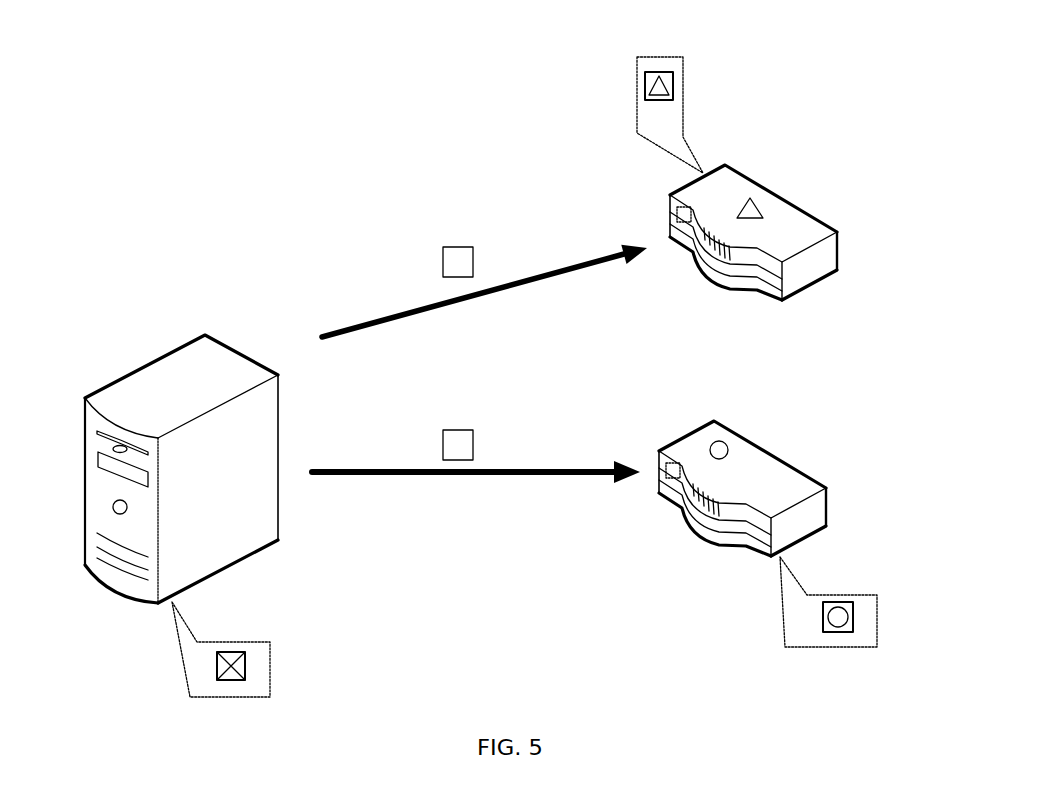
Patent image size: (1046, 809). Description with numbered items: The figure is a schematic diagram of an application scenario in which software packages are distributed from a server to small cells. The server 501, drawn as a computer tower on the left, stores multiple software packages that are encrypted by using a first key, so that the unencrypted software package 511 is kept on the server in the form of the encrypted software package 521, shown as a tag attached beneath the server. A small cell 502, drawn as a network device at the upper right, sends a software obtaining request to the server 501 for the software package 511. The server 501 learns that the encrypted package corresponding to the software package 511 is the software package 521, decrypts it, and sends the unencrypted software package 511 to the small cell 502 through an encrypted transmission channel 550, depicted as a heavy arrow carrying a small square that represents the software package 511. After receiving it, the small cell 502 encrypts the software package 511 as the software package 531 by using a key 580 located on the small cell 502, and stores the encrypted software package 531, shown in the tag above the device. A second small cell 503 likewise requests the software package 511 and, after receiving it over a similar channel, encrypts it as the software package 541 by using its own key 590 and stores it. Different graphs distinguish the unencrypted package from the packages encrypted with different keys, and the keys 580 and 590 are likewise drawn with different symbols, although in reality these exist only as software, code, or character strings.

The server 501 is at (230, 347).
The small cell 502 is at (827, 222).
The small cell 503 is at (823, 472).
The software package 511 is at (460, 242).
The software package 521 is at (238, 650).
The software package 531 is at (651, 68).
The software package 541 is at (847, 600).
The encrypted transmission channel 550 is at (515, 478).
The key 580 is at (752, 200).
The key 590 is at (723, 442).